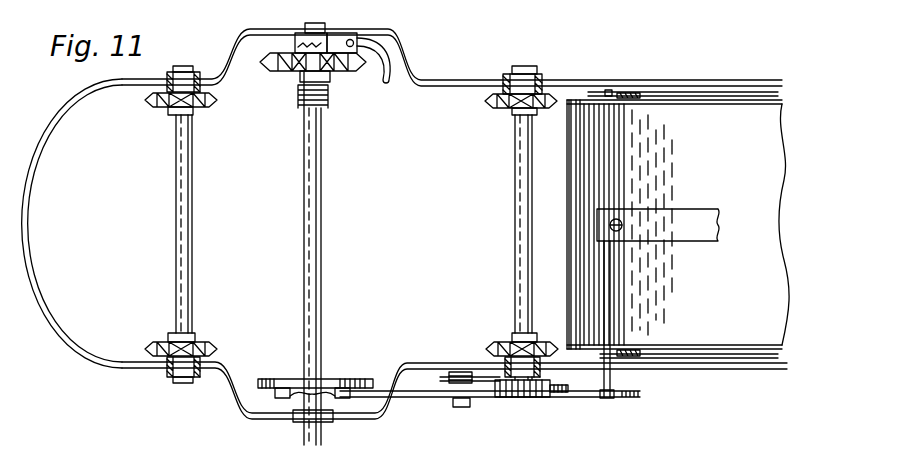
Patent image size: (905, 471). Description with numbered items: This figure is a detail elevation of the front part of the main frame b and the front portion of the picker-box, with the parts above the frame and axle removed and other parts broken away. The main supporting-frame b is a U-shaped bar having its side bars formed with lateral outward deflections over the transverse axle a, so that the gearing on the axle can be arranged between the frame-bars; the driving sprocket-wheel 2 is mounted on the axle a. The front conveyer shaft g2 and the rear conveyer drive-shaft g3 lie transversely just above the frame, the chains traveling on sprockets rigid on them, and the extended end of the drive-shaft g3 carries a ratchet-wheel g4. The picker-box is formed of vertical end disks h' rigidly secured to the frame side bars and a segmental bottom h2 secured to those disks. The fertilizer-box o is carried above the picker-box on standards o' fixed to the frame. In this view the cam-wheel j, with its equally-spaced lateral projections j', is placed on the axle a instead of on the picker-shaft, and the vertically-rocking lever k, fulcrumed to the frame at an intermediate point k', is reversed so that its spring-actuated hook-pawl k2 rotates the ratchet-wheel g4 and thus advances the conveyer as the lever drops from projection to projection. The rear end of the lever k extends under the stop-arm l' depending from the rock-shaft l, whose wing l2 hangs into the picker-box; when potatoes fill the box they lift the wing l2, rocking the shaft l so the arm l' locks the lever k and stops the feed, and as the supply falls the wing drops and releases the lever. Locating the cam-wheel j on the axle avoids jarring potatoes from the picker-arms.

The main supporting-frame b is at (472, 82).
The front conveyer shaft g2 is at (178, 234).
The rear conveyer drive-shaft g3 is at (520, 205).
The ratchet-wheel g4 is at (518, 398).
The driving sprocket-wheel 2 is at (296, 66).
The transverse axle a is at (316, 270).
The picker-box end disks h' is at (678, 232).
The picker-box bottom h2 is at (709, 284).
The fertilizer-box standards o' is at (639, 73).
The fertilizer-box o is at (639, 377).
The wing l2 is at (688, 218).
The rock-shaft l is at (627, 319).
The stop-arm l' is at (597, 413).
The rocking lever k is at (490, 419).
The lever fulcrum k' is at (466, 414).
The hook-pawl k2 is at (563, 400).
The cam-wheel j is at (315, 366).
The lateral projections j' is at (296, 422).